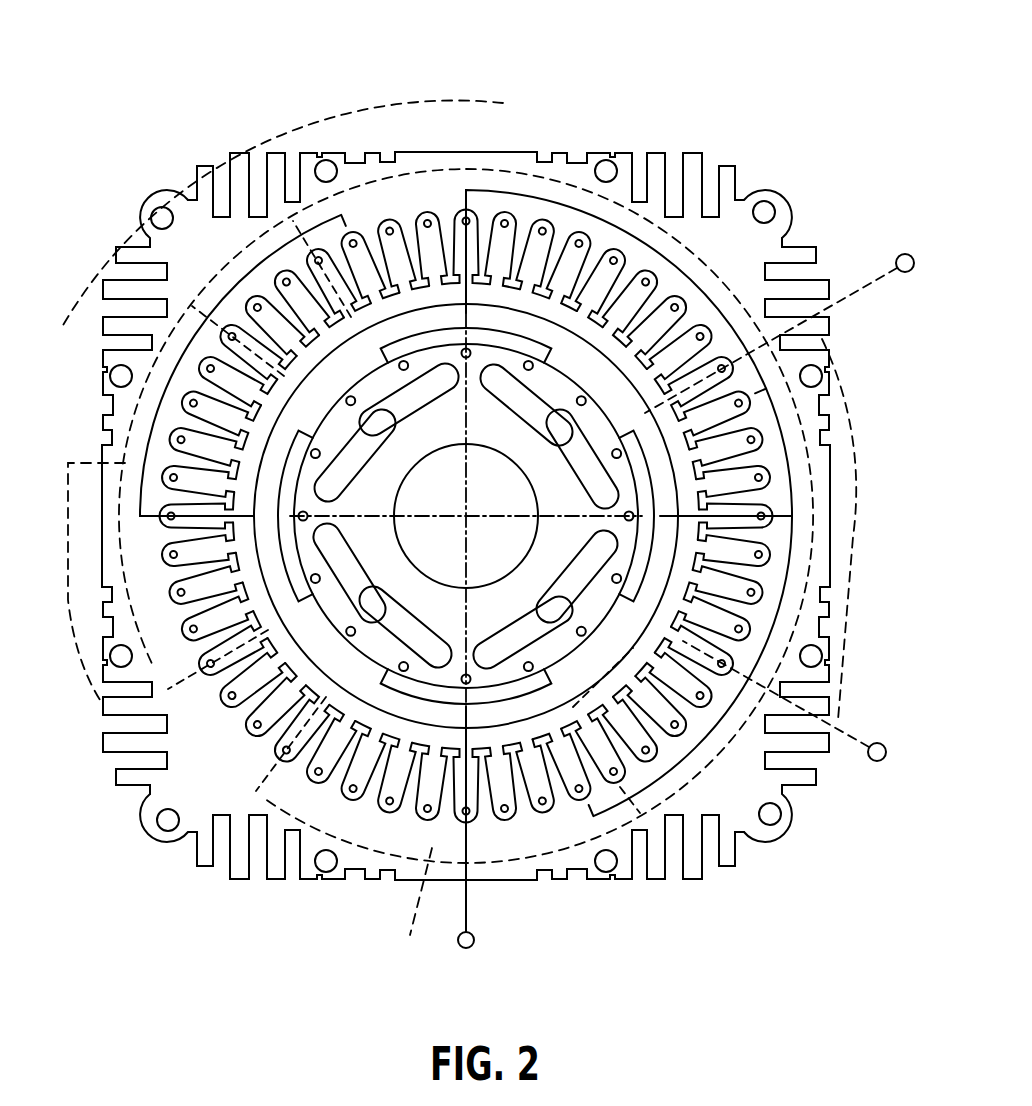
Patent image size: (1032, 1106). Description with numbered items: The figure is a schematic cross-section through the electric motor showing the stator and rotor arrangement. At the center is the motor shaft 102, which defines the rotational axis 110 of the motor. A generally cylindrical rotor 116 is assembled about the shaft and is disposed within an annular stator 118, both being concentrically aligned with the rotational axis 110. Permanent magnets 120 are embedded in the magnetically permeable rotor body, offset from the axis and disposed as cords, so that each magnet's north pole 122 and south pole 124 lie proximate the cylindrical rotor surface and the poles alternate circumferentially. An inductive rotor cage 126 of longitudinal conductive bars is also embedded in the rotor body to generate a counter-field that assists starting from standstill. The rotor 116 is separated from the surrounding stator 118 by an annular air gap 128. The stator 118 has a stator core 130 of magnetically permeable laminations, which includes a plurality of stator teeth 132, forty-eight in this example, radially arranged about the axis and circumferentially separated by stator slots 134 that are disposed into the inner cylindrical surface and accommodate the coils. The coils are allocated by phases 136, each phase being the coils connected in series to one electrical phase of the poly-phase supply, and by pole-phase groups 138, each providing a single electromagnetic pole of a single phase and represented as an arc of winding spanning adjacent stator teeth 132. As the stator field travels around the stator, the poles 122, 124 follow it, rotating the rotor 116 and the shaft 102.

The motor shaft 102 is at (520, 522).
The rotational axis 110 is at (467, 513).
The rotor 116 is at (443, 352).
The stator 118 is at (470, 152).
The permanent magnet 120 is at (337, 480).
The north pole 122 is at (340, 492).
The south pole 124 is at (545, 280).
The inductive rotor cage 126 is at (375, 425).
The annular air gap 128 is at (328, 636).
The stator core 130 is at (262, 250).
The stator tooth 132 is at (470, 367).
The stator slot 134 is at (173, 477).
The phase 136 is at (386, 603).
The pole-phase group 138 is at (578, 652).